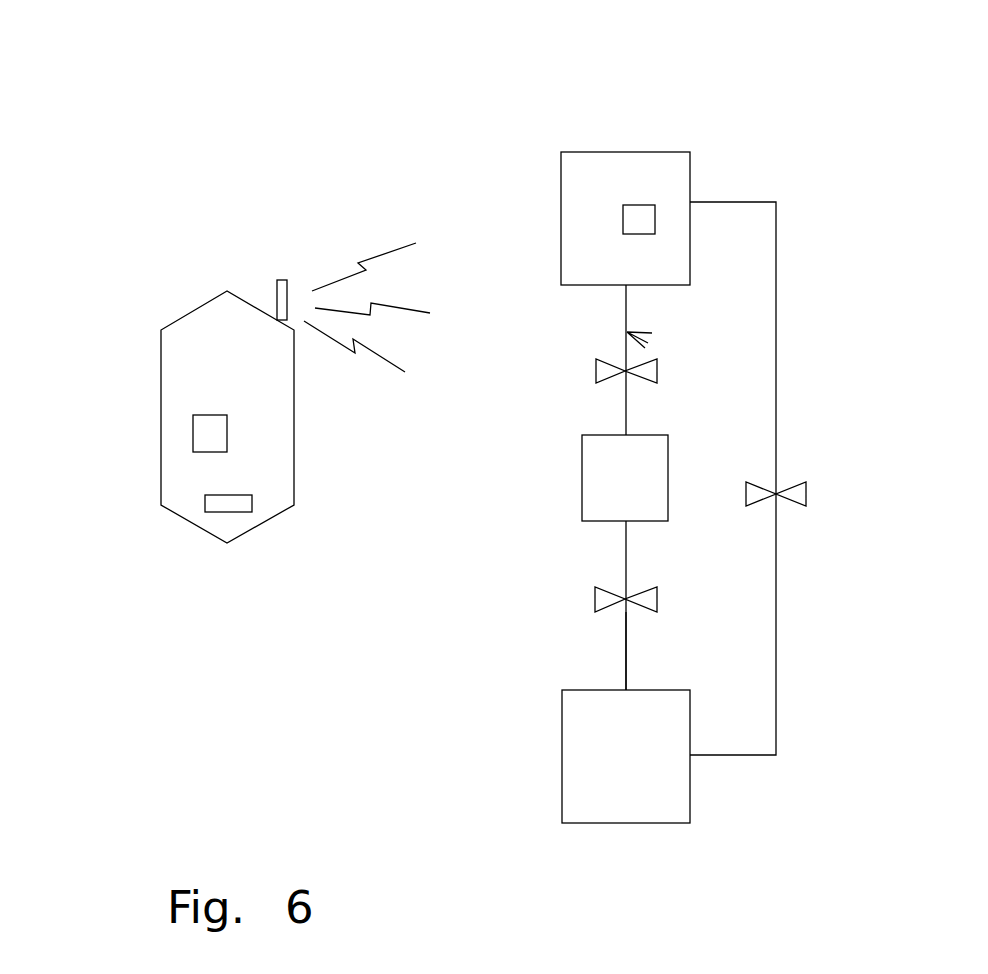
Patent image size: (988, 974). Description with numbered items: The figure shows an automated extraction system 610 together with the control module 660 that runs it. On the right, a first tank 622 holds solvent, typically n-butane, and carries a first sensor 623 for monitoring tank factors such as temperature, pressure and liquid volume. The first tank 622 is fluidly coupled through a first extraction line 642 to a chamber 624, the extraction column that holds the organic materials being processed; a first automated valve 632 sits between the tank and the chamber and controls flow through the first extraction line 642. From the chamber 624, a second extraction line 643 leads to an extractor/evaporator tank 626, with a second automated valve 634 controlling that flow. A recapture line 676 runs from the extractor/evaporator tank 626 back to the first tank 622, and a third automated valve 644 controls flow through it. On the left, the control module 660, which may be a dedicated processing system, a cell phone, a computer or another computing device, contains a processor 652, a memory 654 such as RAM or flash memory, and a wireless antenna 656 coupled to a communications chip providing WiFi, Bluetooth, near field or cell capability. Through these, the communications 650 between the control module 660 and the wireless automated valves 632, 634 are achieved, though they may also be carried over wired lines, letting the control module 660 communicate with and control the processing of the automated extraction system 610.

The automated extraction system 610 is at (584, 112).
The first tank 622 is at (677, 178).
The first sensor 623 is at (641, 217).
The chamber 624 is at (600, 485).
The extractor/evaporator tank 626 is at (615, 800).
The first automated valve 632 is at (597, 370).
The second automated valve 634 is at (597, 598).
The first extraction line 642 is at (648, 343).
The second extraction line 643 is at (626, 650).
The third automated valve 644 is at (806, 494).
The communications 650 is at (380, 218).
The processor 652 is at (202, 435).
The memory 654 is at (239, 505).
The wireless antenna 656 is at (275, 302).
The control module 660 is at (199, 337).
The recapture line 676 is at (777, 331).